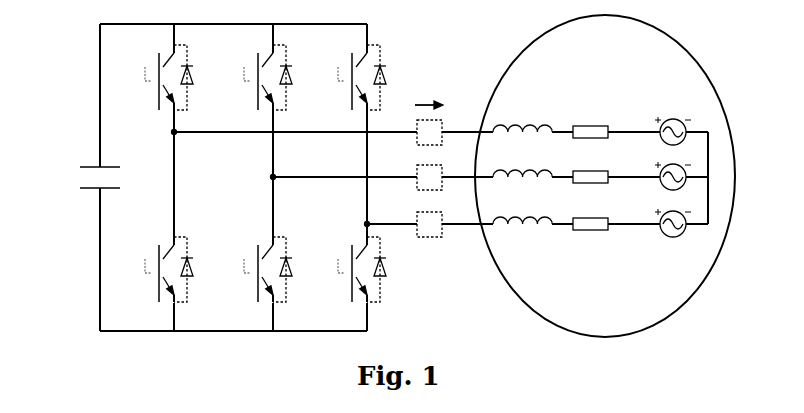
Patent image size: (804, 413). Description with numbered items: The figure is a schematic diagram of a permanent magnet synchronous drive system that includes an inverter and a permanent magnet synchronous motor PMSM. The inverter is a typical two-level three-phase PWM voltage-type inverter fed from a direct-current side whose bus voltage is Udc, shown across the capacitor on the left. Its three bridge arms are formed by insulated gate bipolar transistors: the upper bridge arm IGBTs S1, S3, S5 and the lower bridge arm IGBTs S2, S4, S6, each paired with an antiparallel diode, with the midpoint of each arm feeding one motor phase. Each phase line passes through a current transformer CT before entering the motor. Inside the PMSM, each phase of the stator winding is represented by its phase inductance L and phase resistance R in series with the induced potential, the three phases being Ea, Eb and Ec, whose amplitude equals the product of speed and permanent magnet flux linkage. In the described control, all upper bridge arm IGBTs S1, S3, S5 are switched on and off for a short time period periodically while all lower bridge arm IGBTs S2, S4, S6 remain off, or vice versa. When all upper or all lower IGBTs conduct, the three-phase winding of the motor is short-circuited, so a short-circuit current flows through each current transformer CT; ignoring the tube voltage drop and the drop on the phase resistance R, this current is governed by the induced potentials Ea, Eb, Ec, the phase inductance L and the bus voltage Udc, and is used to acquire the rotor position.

The upper bridge arm IGBT S1 is at (159, 77).
The lower bridge arm IGBT S2 is at (159, 269).
The upper bridge arm IGBT S3 is at (259, 77).
The lower bridge arm IGBT S4 is at (259, 269).
The upper bridge arm IGBT S5 is at (353, 77).
The lower bridge arm IGBT S6 is at (353, 269).
The bus voltage Udc is at (82, 177).
The current transformer CT is at (429, 178).
The phase inductance L is at (522, 165).
The phase resistance R is at (590, 168).
The induced potential of phase a Ea is at (678, 120).
The induced potential of phase b Eb is at (678, 165).
The induced potential of phase c Ec is at (678, 212).
The permanent magnet synchronous motor PMSM is at (605, 176).